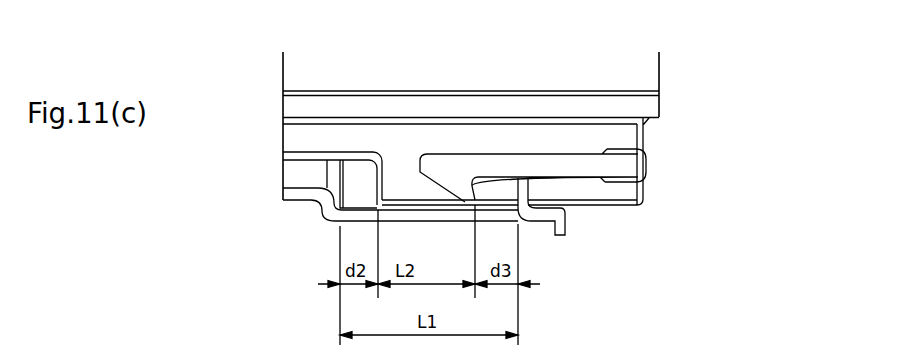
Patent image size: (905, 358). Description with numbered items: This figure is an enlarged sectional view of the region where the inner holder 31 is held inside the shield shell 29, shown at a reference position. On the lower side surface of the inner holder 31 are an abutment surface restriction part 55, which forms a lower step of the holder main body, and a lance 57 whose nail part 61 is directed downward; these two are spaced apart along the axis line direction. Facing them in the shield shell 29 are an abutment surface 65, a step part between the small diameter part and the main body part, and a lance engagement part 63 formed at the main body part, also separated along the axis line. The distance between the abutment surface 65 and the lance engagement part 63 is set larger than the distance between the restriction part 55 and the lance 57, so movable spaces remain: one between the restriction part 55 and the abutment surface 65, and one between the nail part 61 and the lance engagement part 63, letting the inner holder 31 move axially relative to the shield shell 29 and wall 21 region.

The housing wall 21 is at (650, 70).
The inner holder 31 is at (672, 109).
The shield shell 29 is at (304, 208).
The abutment surface restriction part 55 is at (373, 178).
The abutment surface 65 is at (347, 178).
The lance 57 is at (491, 143).
The nail part 61 is at (465, 203).
The lance engagement part 63 is at (540, 187).